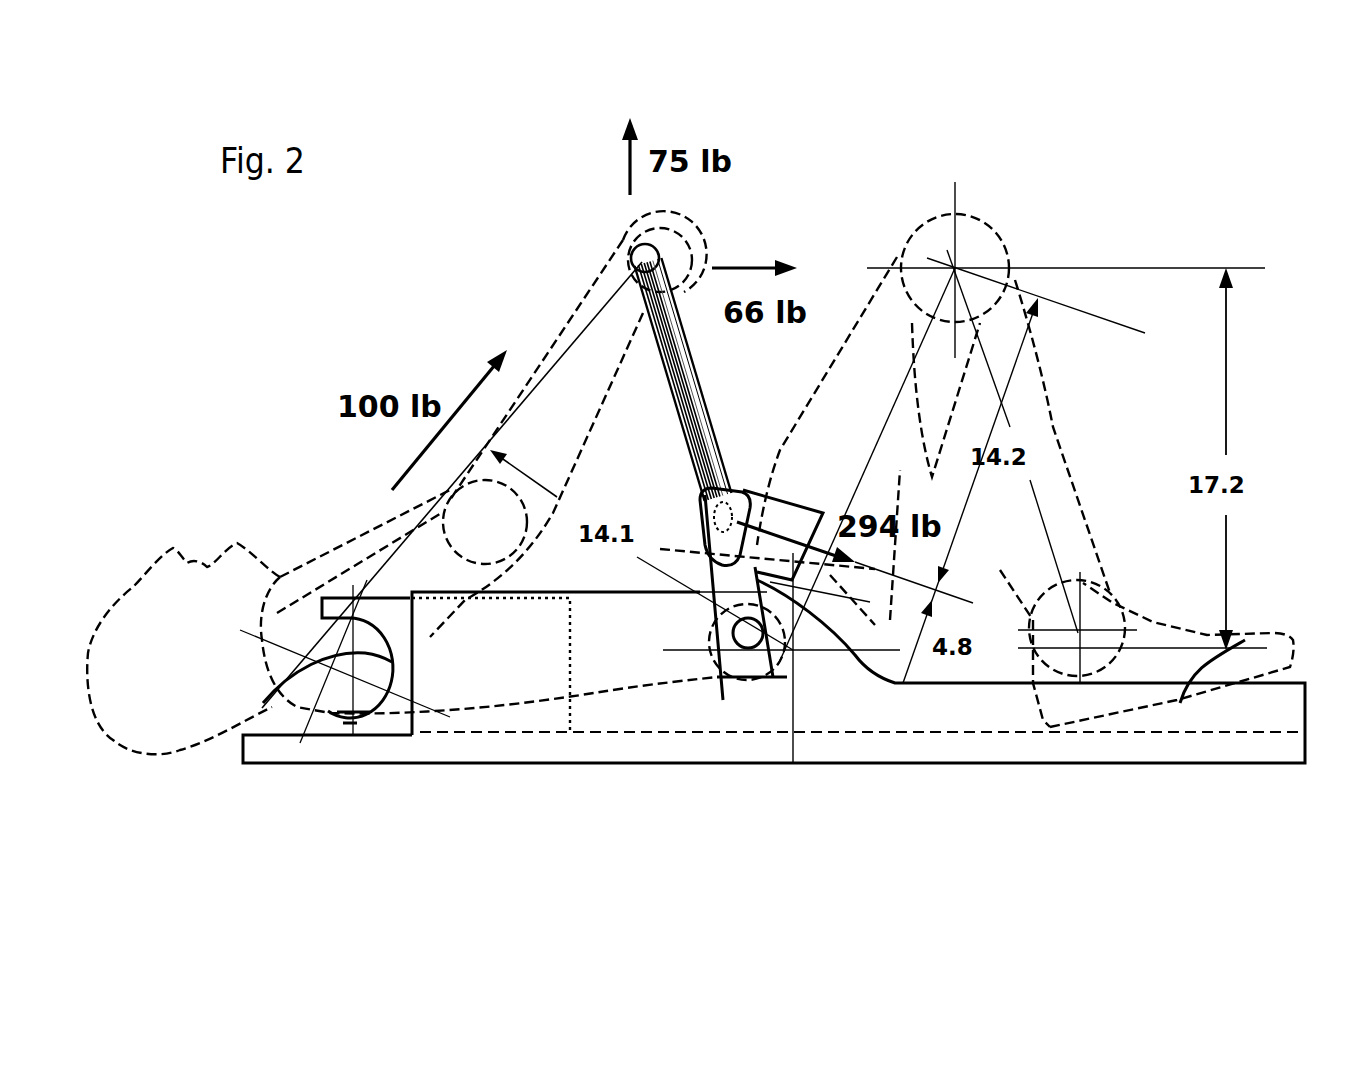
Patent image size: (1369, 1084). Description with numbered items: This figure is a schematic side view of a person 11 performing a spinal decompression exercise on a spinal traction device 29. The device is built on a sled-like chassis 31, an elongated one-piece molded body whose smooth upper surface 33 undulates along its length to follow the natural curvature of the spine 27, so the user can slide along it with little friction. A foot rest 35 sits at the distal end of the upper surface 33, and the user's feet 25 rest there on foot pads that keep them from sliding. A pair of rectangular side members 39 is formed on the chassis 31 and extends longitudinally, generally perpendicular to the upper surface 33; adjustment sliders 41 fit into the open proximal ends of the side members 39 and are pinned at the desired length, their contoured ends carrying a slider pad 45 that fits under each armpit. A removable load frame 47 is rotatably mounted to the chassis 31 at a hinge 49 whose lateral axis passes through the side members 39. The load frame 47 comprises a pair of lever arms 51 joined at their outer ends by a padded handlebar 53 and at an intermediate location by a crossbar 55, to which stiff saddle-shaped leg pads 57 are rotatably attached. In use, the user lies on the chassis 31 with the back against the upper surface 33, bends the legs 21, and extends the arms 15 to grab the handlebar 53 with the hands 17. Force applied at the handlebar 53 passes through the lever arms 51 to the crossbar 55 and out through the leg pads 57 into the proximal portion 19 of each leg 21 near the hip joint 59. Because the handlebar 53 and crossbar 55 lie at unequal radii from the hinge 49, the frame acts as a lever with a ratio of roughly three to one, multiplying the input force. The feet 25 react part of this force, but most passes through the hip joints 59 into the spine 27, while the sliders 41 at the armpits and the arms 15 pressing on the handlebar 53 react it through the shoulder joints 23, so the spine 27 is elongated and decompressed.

The person 11 is at (309, 547).
The arms 15 is at (560, 337).
The hands 17 is at (627, 233).
The proximal portion 19 is at (797, 497).
The legs 21 is at (1033, 393).
The shoulder joints 23 is at (263, 703).
The feet 25 is at (1182, 636).
The spine 27 is at (774, 727).
The spinal traction device 29 is at (415, 776).
The chassis 31 is at (560, 762).
The upper surface 33 is at (965, 715).
The foot rest 35 is at (1245, 640).
The side members 39 is at (628, 700).
The adjustment sliders 41 is at (397, 703).
The slider pad 45 is at (352, 617).
The load frame 47 is at (703, 349).
The hinge 49 is at (722, 690).
The lever arms 51 is at (683, 390).
The handlebar 53 is at (652, 258).
The crossbar 55 is at (712, 512).
The leg pads 57 is at (782, 520).
The hip joint 59 is at (797, 655).